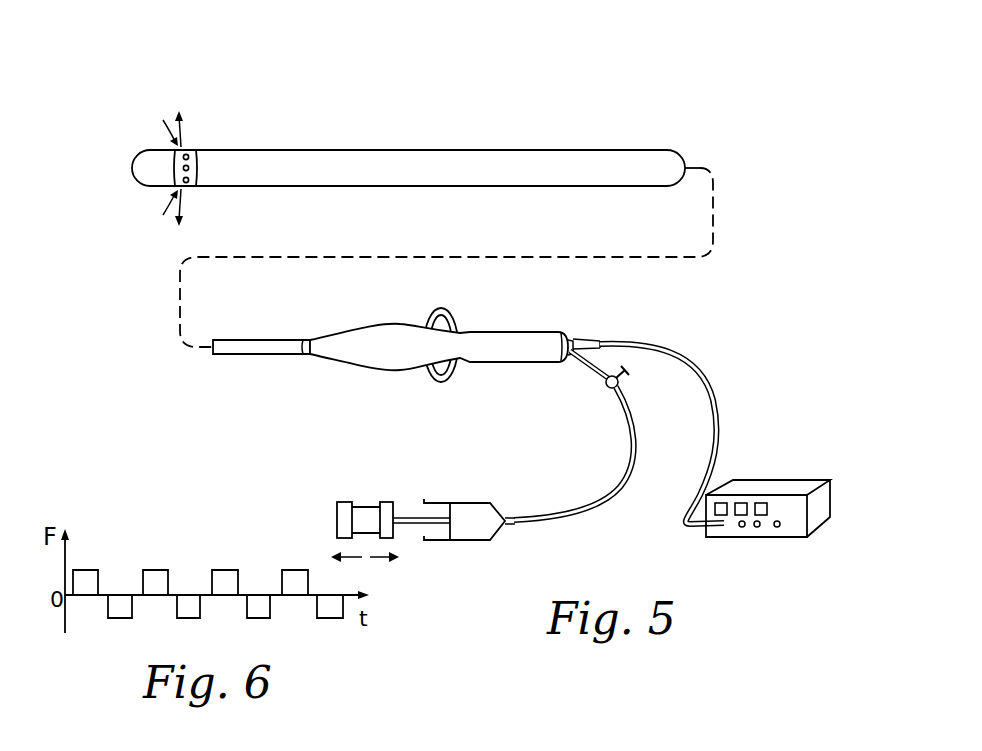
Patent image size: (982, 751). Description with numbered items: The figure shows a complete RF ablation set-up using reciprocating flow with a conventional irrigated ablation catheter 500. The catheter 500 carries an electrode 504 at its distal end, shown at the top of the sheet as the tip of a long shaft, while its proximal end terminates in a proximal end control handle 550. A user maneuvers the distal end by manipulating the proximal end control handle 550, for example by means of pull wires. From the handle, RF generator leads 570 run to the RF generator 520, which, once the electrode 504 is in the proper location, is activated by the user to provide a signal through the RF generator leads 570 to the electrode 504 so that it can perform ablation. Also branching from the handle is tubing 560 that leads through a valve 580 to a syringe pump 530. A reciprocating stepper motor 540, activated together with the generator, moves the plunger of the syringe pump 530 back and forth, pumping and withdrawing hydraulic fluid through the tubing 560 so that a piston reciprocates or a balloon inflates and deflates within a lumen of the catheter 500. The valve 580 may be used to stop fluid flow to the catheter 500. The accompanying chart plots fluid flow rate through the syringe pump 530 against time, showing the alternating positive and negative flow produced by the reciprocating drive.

The catheter 500 is at (434, 72).
The electrode 504 is at (190, 120).
The RF generator 520 is at (798, 481).
The syringe pump 530 is at (486, 515).
The reciprocating stepper motor 540 is at (352, 505).
The proximal end control handle 550 is at (500, 330).
The tubing 560 is at (638, 430).
The RF generator leads 570 is at (704, 372).
The valve 580 is at (606, 385).